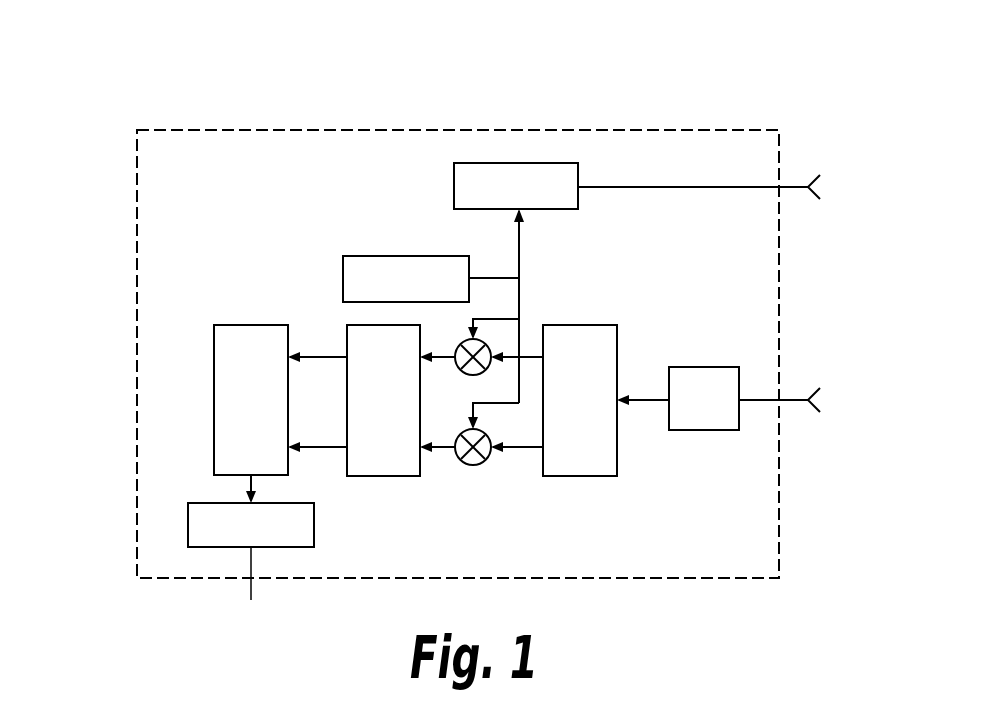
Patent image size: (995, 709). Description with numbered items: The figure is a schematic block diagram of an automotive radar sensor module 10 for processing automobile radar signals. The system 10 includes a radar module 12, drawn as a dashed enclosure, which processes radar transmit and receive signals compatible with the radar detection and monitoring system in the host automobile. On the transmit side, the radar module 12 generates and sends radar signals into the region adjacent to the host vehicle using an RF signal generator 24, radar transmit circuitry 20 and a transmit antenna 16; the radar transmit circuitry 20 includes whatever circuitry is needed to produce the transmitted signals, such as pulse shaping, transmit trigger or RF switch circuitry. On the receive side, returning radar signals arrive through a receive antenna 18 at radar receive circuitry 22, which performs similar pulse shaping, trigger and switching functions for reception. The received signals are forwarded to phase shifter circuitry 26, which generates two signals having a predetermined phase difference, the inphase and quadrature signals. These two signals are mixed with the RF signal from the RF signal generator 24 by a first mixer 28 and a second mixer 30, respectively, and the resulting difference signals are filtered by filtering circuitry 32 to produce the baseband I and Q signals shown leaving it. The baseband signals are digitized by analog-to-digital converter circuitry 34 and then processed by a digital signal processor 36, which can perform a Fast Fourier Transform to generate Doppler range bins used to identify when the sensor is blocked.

The automotive radar sensor module 10 is at (114, 119).
The radar module 12 is at (213, 194).
The transmit antenna 16 is at (817, 196).
The receive antenna 18 is at (817, 409).
The radar transmit circuitry 20 is at (504, 199).
The radar receive circuitry 22 is at (692, 412).
The RF signal generator 24 is at (394, 291).
The phase shifter circuitry 26 is at (568, 412).
The mixer 28 is at (466, 374).
The mixer 30 is at (462, 465).
The filtering circuitry 32 is at (371, 412).
The analog-to-digital converter circuitry 34 is at (239, 412).
The digital signal processor 36 is at (239, 537).